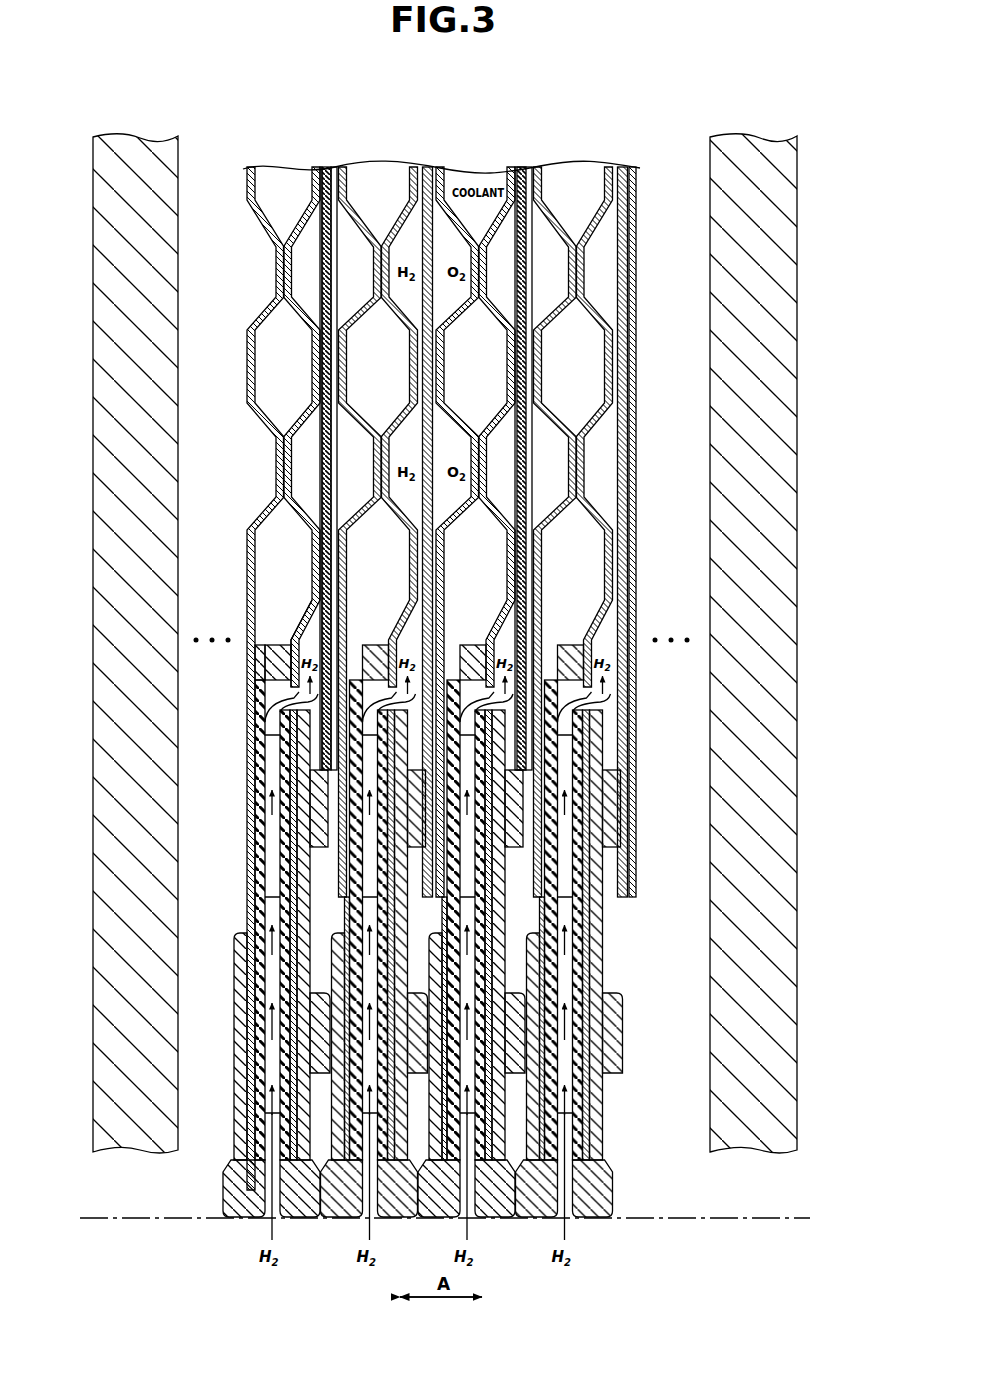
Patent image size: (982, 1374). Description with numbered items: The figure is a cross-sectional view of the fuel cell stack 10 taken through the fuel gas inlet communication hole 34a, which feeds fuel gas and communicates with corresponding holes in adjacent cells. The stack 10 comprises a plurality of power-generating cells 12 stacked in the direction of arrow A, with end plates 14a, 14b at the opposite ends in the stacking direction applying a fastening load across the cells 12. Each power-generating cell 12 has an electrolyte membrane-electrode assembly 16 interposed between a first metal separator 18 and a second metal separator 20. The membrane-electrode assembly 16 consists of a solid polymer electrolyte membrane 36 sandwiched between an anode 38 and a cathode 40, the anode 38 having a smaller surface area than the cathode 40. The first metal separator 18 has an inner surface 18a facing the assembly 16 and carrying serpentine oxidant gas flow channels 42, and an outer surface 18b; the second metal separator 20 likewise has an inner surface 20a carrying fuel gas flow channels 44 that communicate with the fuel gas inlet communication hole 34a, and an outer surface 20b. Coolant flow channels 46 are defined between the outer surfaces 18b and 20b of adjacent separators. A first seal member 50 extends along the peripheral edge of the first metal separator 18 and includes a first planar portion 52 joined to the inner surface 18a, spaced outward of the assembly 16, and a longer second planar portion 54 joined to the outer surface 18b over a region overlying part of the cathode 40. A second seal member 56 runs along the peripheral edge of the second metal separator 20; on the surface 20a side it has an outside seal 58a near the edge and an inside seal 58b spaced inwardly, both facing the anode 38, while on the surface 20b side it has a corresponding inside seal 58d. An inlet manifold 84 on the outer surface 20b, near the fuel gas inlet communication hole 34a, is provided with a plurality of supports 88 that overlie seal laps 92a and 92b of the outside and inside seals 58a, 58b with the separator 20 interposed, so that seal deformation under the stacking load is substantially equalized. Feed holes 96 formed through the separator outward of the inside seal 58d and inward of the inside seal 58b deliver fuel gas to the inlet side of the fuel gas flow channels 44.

The fuel cell stack 10 is at (224, 100).
The power-generating cell 12 is at (521, 161).
The end plate 14a is at (135, 1130).
The end plate 14b is at (755, 1128).
The electrolyte membrane-electrode assembly 16 is at (334, 421).
The first metal separator 18 is at (315, 508).
The inner surface of first metal separator 18a is at (318, 372).
The outer surface of first metal separator 18b is at (358, 353).
The second metal separator 20 is at (265, 656).
The inner surface of second metal separator 20a is at (318, 390).
The outer surface of second metal separator 20b is at (340, 375).
The fuel gas inlet communication hole 34a is at (650, 1222).
The solid polymer electrolyte membrane 36 is at (333, 167).
The anode 38 is at (319, 166).
The cathode 40 is at (357, 441).
The oxidant gas flow channels 42 is at (358, 272).
The fuel gas flow channels 44 is at (307, 270).
The coolant flow channels 46 is at (575, 370).
The first seal member 50 is at (233, 1078).
The first planar portion 52 is at (430, 942).
The second planar portion 54 is at (277, 874).
The second seal member 56 is at (628, 1078).
The outside seal 58a is at (320, 1053).
The inside seal 58b is at (318, 790).
The inside seal 58d is at (296, 638).
The inlet manifold 84 is at (570, 972).
The supports 88 is at (353, 907).
The seal lap 92a is at (655, 1033).
The seal lap 92b is at (655, 813).
The feed holes 96 is at (275, 660).